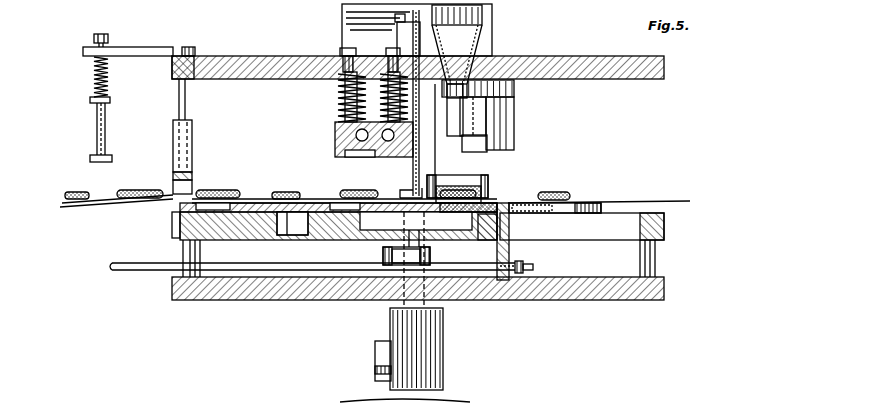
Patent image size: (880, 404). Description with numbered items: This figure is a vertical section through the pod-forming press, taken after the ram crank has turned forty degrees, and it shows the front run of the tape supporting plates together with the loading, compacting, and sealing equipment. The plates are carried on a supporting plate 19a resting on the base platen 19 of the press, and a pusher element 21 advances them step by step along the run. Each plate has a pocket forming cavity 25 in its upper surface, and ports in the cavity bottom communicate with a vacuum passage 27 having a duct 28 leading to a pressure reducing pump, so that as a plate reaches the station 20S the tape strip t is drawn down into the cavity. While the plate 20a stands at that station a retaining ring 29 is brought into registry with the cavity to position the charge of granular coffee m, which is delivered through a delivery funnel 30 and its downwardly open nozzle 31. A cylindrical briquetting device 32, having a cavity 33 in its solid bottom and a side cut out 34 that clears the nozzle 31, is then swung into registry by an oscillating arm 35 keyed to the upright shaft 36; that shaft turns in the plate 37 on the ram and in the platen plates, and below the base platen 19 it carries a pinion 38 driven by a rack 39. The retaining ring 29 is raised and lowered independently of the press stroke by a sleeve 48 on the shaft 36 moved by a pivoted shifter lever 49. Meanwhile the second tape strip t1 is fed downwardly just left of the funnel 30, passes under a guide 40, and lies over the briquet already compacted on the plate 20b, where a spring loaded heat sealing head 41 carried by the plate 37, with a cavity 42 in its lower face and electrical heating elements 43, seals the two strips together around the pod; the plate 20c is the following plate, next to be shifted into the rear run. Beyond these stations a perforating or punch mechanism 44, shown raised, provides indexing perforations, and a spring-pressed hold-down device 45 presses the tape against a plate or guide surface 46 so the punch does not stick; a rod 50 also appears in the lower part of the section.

The base platen 19 is at (664, 290).
The supporting plate 19a is at (664, 237).
The tape supporting plate 20a is at (504, 197).
The tape supporting plate 20b is at (328, 214).
The tape supporting plate 20c is at (263, 222).
The station 20S is at (498, 184).
The pusher element 21 is at (509, 248).
The pocket forming cavity 25 is at (509, 225).
The vacuum passage 27 is at (398, 226).
The duct 28 is at (406, 234).
The retaining ring 29 is at (493, 182).
The delivery funnel 30 is at (487, 30).
The nozzle 31 is at (484, 122).
The briquetting device 32 is at (514, 99).
The cavity 33 is at (480, 152).
The cut out 34 is at (514, 110).
The oscillating arm 35 is at (438, 97).
The upright shaft 36 is at (410, 165).
The plate 37 is at (240, 56).
The pinion 38 is at (443, 332).
The rack 39 is at (374, 348).
The guide 40 is at (410, 187).
The heat sealing head 41 is at (335, 141).
The cavity 42 is at (352, 155).
The electrical heating elements 43 is at (340, 126).
The perforating or punch mechanism 44 is at (173, 152).
The spring-pressed hold-down device 45 is at (96, 124).
The plate or guide surface 46 is at (98, 206).
The sleeve 48 is at (440, 246).
The shifter lever 49 is at (430, 258).
The rod 50 is at (156, 269).
The granular coffee m is at (437, 178).
The tape strip t is at (680, 200).
The second tape strip t1 is at (400, 32).